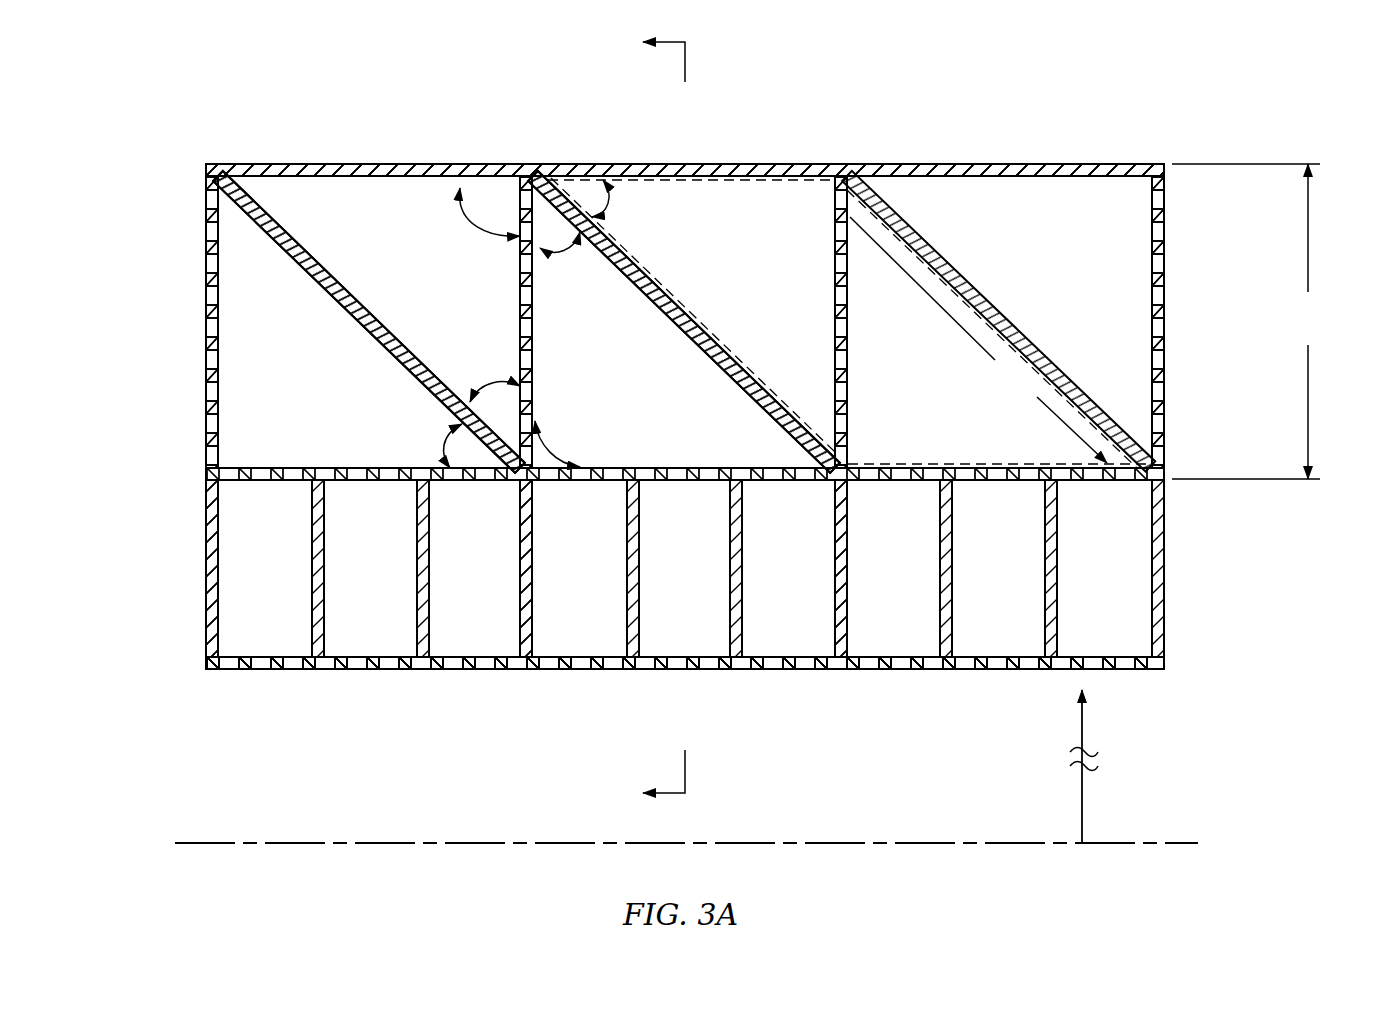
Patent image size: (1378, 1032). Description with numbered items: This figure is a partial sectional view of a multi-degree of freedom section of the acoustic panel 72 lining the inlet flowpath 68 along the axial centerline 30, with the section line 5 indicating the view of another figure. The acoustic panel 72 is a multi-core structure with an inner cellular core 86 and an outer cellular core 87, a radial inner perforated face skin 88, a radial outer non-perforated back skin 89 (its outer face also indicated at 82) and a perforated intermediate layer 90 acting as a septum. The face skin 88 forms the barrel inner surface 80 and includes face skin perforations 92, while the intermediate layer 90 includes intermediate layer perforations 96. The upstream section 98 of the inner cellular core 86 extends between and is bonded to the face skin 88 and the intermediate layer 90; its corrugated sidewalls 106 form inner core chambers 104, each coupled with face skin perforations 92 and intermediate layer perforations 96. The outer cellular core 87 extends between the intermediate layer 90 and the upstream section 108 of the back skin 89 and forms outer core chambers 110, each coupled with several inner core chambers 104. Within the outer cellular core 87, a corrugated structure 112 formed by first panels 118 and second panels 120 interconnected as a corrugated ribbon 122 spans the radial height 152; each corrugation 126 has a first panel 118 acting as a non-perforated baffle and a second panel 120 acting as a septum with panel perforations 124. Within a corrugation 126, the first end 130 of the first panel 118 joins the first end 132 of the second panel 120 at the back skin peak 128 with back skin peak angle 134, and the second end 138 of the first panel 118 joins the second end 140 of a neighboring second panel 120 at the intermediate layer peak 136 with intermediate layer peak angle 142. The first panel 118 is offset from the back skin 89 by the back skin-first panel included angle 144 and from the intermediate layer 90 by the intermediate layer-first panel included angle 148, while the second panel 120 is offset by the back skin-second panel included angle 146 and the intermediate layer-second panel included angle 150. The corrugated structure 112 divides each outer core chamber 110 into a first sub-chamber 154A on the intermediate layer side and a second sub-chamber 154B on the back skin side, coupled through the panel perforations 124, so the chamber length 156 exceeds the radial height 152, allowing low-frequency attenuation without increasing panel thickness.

The acoustic panel 72 is at (305, 85).
The top plate 82 is at (235, 164).
The back skin 89 is at (198, 167).
The upstream section of the back skin 108 is at (685, 170).
The corrugation 126 is at (193, 212).
The outer core chamber 110 is at (235, 323).
The outer cellular core 87 is at (185, 348).
The panel perforations 124 is at (218, 365).
The intermediate layer 90 is at (197, 474).
The corrugated sidewalls 106 is at (205, 530).
The inner cellular core 86 is at (183, 568).
The upstream section of the inner cellular core 98 is at (212, 568).
The face skin 88 is at (197, 668).
The barrel inner surface 80 is at (245, 672).
The face skin perforations 92 is at (298, 670).
The inlet flowpath 68 is at (272, 800).
The intermediate layer peak 136 is at (450, 670).
The second end of the first panel 138 is at (685, 663).
The second end of the second panel 140 is at (685, 663).
The inner core chambers 104 is at (388, 594).
The intermediate layer perforations 96 is at (372, 468).
The second panel 120 is at (220, 290).
The first panel 118 is at (348, 290).
The first sub-chamber 154A is at (375, 374).
The second sub-chamber 154B is at (477, 291).
The back skin-second panel included angle 146 is at (470, 228).
The back skin-first panel included angle 144 is at (608, 200).
The back skin peak angle 134 is at (568, 252).
The intermediate layer peak angle 142 is at (494, 384).
The intermediate layer-first panel included angle 148 is at (446, 444).
The intermediate layer-second panel included angle 150 is at (546, 430).
The back skin peak 128 is at (533, 180).
The first end of the first panel 130 is at (683, 416).
The first end of the second panel 132 is at (683, 416).
The corrugated structure 112 is at (1168, 315).
The corrugated ribbon 122 is at (1158, 322).
The radial height of the outer cellular core 152 is at (1250, 321).
The length of the outer core chamber 156 is at (978, 340).
The axial centerline 30 is at (1192, 843).
The section line 5 is at (652, 418).